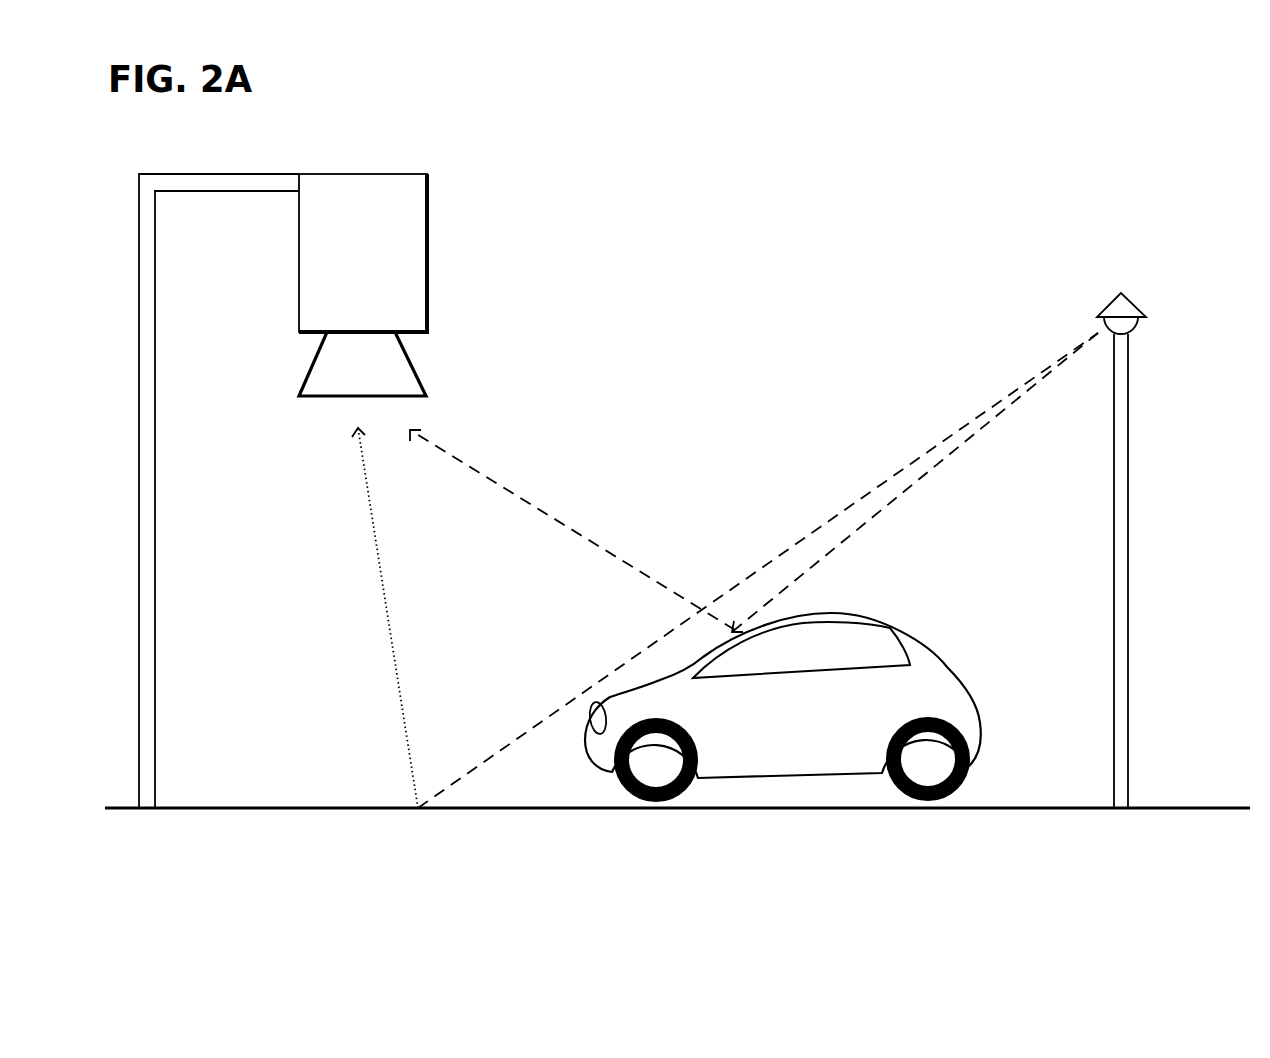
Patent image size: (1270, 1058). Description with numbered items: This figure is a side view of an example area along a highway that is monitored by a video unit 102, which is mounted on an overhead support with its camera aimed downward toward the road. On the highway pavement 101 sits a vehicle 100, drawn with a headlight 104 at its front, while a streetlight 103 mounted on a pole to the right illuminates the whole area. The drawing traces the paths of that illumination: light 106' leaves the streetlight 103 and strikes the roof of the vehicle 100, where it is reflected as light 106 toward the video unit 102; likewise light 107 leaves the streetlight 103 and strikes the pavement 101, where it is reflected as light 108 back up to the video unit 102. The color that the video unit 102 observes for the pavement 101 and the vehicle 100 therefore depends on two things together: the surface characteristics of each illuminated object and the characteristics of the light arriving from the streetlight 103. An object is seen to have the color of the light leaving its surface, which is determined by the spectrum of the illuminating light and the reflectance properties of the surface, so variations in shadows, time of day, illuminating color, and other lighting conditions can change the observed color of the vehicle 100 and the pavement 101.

The vehicle 100 is at (980, 713).
The highway pavement 101 is at (867, 810).
The video unit 102 is at (372, 271).
The streetlight 103 is at (1133, 299).
The headlight 104 is at (593, 735).
The light reflected off the vehicle 106 is at (572, 530).
The light from the streetlight 106' is at (915, 482).
The light from the streetlight 107 is at (788, 547).
The light reflected off the pavement 108 is at (395, 663).